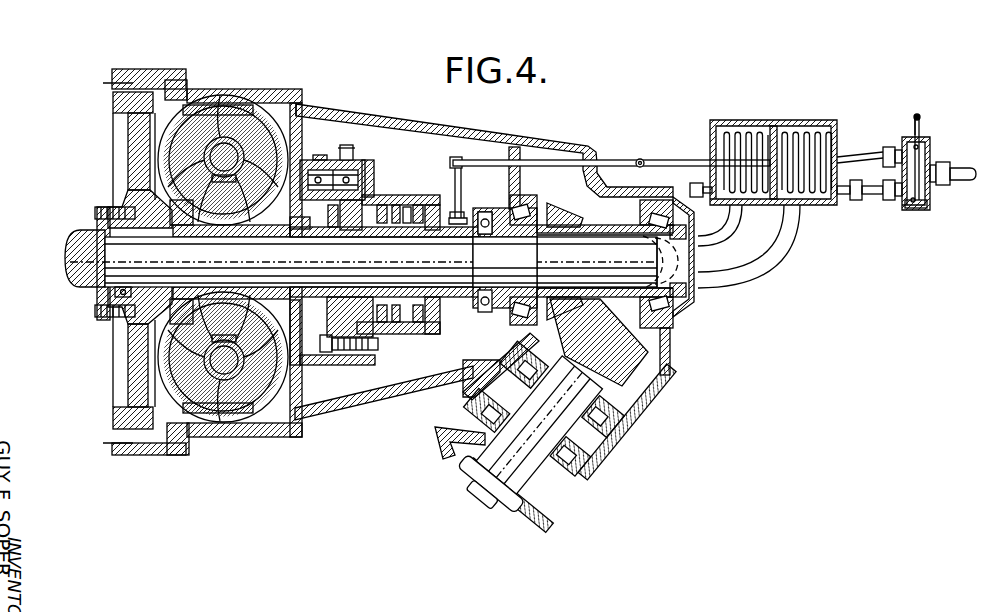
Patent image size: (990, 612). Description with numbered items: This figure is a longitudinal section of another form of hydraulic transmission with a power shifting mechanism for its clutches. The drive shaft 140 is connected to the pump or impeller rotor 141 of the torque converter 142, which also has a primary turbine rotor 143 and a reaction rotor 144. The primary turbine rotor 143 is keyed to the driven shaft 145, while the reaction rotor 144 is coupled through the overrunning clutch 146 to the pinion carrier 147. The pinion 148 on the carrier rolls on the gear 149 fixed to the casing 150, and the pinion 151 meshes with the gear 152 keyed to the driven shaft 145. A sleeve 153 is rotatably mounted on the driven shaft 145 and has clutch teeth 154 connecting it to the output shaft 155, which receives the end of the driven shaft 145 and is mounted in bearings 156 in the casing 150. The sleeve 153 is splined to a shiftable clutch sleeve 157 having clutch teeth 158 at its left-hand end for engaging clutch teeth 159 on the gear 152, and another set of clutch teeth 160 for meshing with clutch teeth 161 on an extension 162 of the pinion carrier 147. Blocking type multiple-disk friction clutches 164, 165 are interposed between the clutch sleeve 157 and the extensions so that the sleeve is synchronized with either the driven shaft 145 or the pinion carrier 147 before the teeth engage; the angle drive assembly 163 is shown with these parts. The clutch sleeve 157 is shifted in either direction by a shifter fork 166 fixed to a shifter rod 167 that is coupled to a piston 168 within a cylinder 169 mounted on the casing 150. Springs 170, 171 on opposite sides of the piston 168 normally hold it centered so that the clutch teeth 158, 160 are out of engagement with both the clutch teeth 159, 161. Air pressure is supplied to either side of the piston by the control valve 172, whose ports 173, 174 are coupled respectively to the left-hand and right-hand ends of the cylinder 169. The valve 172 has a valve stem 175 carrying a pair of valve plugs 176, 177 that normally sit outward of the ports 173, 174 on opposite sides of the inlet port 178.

The drive shaft 140 is at (78, 246).
The pump or impeller rotor 141 is at (303, 110).
The torque converter 142 is at (266, 108).
The primary turbine rotor 143 is at (203, 128).
The reaction rotor 144 is at (226, 212).
The driven shaft 145 is at (143, 277).
The overrunning clutch 146 is at (299, 228).
The pinion carrier 147 is at (371, 163).
The pinion 148 is at (323, 158).
The gear 149 is at (330, 208).
The casing 150 is at (489, 125).
The pinion 151 is at (351, 150).
The gear 152 is at (370, 233).
The sleeve 153 is at (468, 228).
The clutch teeth 154 is at (478, 215).
The output shaft 155 is at (690, 284).
The bearings 156 is at (526, 206).
The shiftable clutch sleeve 157 is at (449, 218).
The clutch teeth 158 is at (396, 226).
The clutch teeth 159 is at (378, 225).
The clutch teeth 160 is at (425, 228).
The clutch teeth 161 is at (428, 206).
The extension 162 is at (380, 195).
The angle drive assembly 163 is at (550, 414).
The blocking type multiple-disk friction clutch 164 is at (387, 323).
The blocking type multiple-disk friction clutch 165 is at (430, 324).
The shifter fork 166 is at (447, 178).
The shifter rod 167 is at (620, 160).
The piston 168 is at (773, 128).
The cylinder 169 is at (807, 200).
The spring 170 is at (750, 142).
The spring 171 is at (797, 143).
The control valve 172 is at (930, 153).
The port 173 is at (897, 152).
The port 174 is at (900, 192).
The valve stem 175 is at (920, 122).
The valve plug 176 is at (936, 166).
The valve plug 177 is at (928, 202).
The inlet port 178 is at (938, 177).